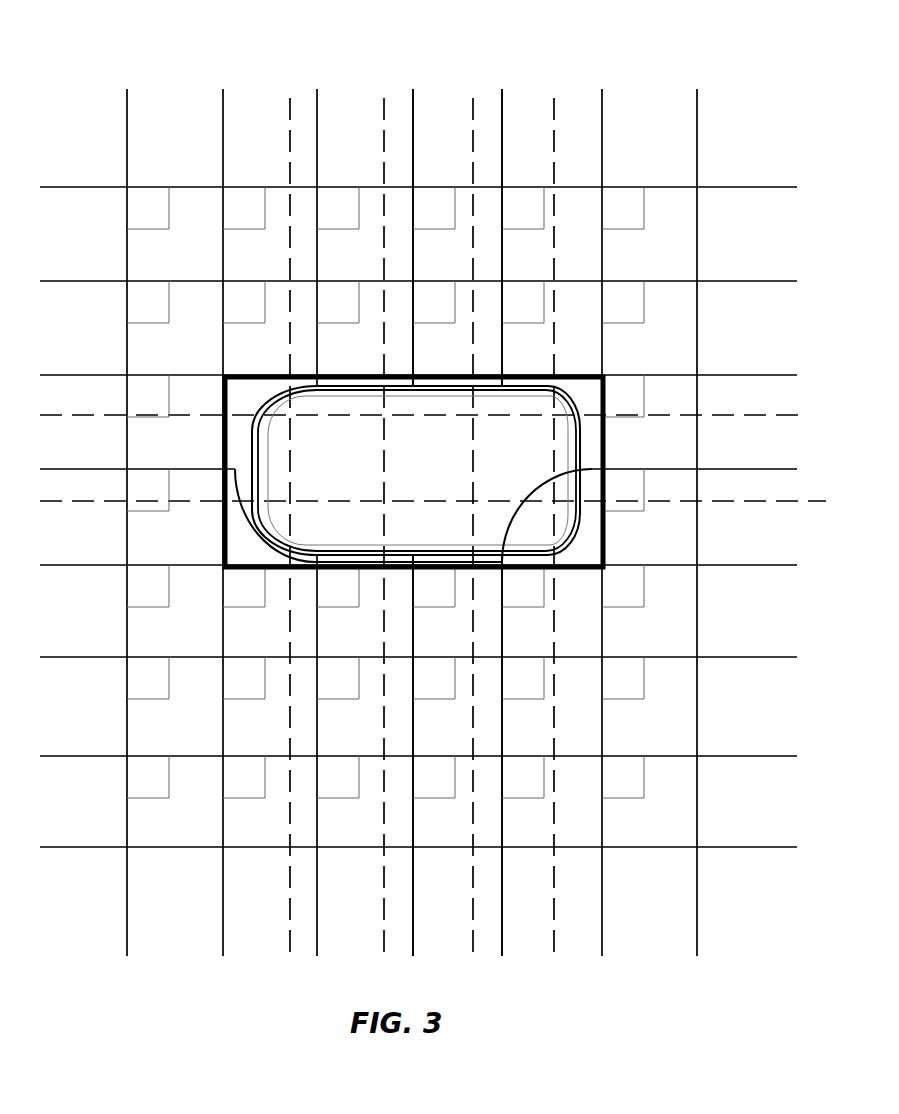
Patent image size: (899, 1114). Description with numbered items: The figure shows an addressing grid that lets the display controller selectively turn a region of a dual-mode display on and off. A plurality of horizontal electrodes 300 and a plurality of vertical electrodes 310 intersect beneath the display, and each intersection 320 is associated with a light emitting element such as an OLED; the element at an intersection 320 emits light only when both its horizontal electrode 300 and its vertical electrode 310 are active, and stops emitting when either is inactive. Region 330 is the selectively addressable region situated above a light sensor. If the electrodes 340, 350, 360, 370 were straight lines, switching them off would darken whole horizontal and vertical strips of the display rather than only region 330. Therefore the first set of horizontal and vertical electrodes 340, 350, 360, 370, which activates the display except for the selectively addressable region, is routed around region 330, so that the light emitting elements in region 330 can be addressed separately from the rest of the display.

The horizontal electrode 300 is at (110, 187).
The vertical electrode 310 is at (224, 118).
The intersection 320 is at (245, 208).
The region 330 is at (355, 473).
The electrode 340 is at (300, 102).
The electrode 350 is at (414, 110).
The electrode 360 is at (501, 110).
The electrode 370 is at (742, 468).